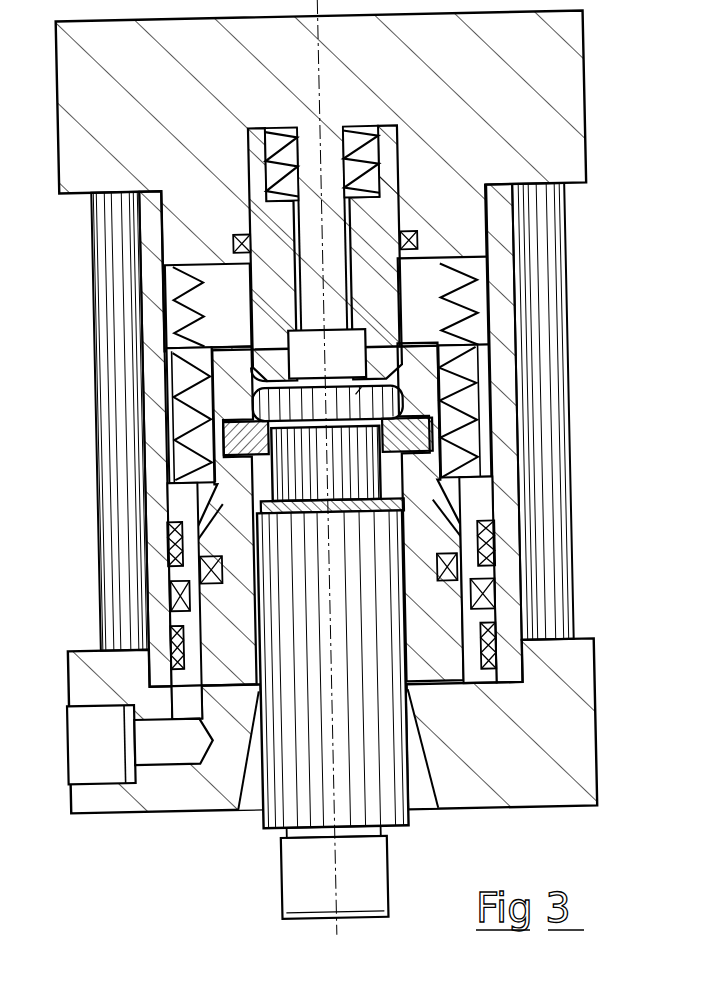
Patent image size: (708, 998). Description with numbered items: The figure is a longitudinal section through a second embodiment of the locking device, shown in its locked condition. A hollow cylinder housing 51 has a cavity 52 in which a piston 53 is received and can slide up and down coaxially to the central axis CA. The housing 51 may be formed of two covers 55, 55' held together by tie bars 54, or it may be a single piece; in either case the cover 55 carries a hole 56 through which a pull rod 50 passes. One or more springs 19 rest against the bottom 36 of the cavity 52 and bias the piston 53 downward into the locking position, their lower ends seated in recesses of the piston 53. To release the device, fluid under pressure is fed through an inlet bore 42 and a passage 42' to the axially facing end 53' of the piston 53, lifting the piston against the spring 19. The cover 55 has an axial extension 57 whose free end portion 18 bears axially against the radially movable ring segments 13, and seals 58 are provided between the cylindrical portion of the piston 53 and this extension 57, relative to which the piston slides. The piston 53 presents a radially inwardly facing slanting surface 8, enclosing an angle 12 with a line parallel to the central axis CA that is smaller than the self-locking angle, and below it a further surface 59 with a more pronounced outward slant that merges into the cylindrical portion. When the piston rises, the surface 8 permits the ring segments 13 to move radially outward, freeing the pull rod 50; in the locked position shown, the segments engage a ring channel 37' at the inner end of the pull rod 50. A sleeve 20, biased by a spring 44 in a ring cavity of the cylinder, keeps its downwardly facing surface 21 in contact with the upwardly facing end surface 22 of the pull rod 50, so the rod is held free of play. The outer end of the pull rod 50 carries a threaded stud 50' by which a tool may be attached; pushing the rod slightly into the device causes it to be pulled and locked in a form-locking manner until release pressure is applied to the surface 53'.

The cover 55' is at (352, 181).
The cover 55 is at (346, 743).
The tie bars 54 is at (548, 370).
The cylinder housing 51 is at (502, 286).
The cavity 52 is at (234, 304).
The bottom of the cavity 36 is at (429, 265).
The spring 19 is at (445, 300).
The slanting radially inwardly facing surface 8 is at (240, 372).
The sleeve 20 is at (380, 224).
The biasing spring 44 is at (362, 130).
The downwardly facing surface 21 is at (278, 362).
The upwardly facing end surface 22 is at (327, 403).
The angle 12 is at (352, 400).
The ring segments 13 is at (226, 430).
The free end portion 18 is at (407, 480).
The ring channel 37' is at (331, 469).
The passage 42' is at (202, 601).
The axial extension 57 is at (437, 610).
The piston member 53 is at (205, 574).
The axially facing end 53' is at (211, 638).
The seals 58 is at (223, 552).
The piston surface 59 is at (430, 508).
The hole 56 is at (408, 799).
The inlet bore 42 is at (117, 744).
The pull rod 50 is at (301, 698).
The threaded stud 50' is at (306, 879).
The central axis CA is at (322, 924).